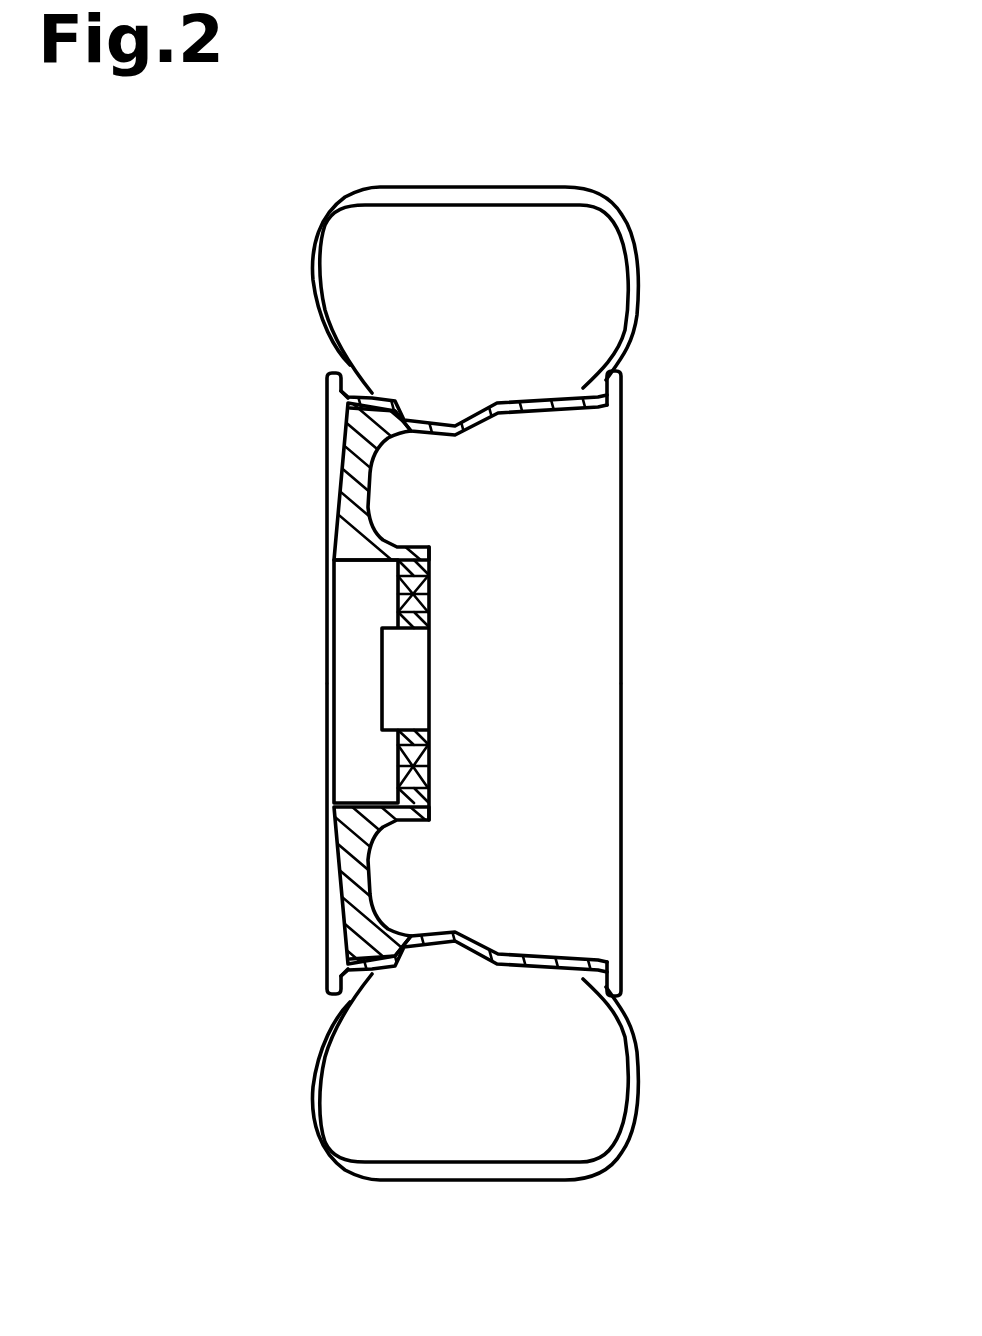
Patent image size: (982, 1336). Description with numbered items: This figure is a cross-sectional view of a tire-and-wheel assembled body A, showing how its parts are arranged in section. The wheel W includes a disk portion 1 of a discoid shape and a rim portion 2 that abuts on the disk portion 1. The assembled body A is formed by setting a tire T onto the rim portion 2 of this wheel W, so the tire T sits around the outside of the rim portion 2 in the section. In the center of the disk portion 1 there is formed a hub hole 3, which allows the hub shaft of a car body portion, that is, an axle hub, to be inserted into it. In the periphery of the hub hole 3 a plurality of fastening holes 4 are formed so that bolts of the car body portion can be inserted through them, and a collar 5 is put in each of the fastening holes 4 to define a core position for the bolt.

The assembled body A is at (647, 190).
The tire T is at (442, 190).
The wheel W is at (624, 742).
The disk portion 1 is at (340, 472).
The rim portion 2 is at (593, 488).
The hub hole 3 is at (400, 693).
The fastening holes 4 is at (400, 580).
The collar 5 is at (400, 608).